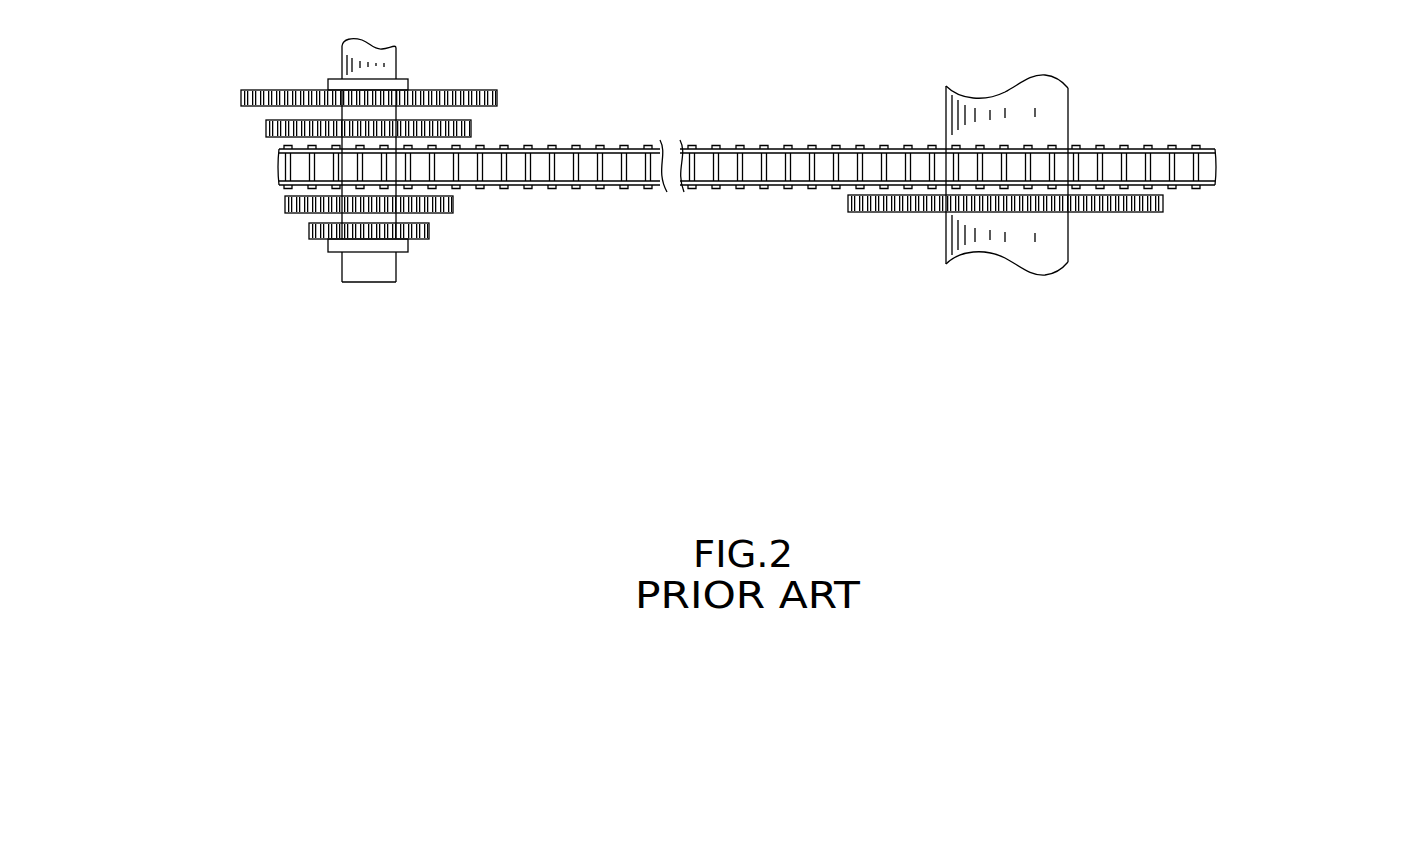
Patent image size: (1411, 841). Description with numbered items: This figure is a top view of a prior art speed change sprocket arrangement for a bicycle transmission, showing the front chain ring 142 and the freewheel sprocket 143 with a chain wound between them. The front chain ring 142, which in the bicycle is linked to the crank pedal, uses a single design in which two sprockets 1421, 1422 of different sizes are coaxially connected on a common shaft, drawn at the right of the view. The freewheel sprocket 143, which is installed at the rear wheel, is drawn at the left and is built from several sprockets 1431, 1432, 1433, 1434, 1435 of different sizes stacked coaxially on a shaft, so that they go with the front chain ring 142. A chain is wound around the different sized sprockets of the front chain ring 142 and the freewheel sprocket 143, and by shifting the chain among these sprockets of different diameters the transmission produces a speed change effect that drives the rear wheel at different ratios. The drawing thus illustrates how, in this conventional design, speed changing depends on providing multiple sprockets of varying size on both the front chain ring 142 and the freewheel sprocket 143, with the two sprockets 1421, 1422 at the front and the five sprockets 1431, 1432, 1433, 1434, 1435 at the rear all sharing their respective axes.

The freewheel sprocket 143 is at (127, 72).
The sprocket 1435 is at (241, 98).
The sprocket 1434 is at (266, 129).
The sprocket 1433 is at (297, 170).
The sprocket 1432 is at (285, 204).
The sprocket 1431 is at (309, 231).
The front chain ring 142 is at (1333, 122).
The sprocket 1421 is at (1200, 165).
The sprocket 1422 is at (1164, 203).